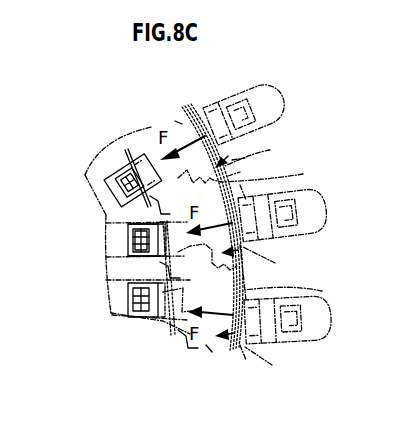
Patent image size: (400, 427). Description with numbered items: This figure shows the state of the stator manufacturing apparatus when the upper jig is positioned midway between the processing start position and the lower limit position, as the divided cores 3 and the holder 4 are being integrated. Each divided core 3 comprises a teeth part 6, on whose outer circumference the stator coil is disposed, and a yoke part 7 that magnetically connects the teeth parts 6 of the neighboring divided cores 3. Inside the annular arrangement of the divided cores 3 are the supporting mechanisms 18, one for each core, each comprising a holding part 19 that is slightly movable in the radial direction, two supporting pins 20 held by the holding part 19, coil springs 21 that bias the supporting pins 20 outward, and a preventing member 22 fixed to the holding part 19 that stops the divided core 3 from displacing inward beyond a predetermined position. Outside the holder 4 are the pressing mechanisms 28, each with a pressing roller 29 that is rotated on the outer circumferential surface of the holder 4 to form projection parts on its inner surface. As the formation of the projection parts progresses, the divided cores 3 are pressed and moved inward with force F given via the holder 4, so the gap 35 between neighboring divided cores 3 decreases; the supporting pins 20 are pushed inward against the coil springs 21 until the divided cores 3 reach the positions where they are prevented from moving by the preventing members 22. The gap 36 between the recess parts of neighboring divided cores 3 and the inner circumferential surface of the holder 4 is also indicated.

The divided core 3 is at (254, 260).
The holder 4 is at (241, 168).
The teeth part 6 is at (189, 373).
The yoke part 7 is at (210, 352).
The supporting mechanism 18 is at (88, 168).
The holding part 19 is at (133, 243).
The supporting pin 20 is at (165, 275).
The coil spring 21 is at (128, 225).
The preventing member 22 is at (165, 255).
The pressing mechanism 28 is at (264, 76).
The pressing roller 29 is at (240, 358).
The gap 35 is at (170, 334).
The gap 36 is at (283, 230).